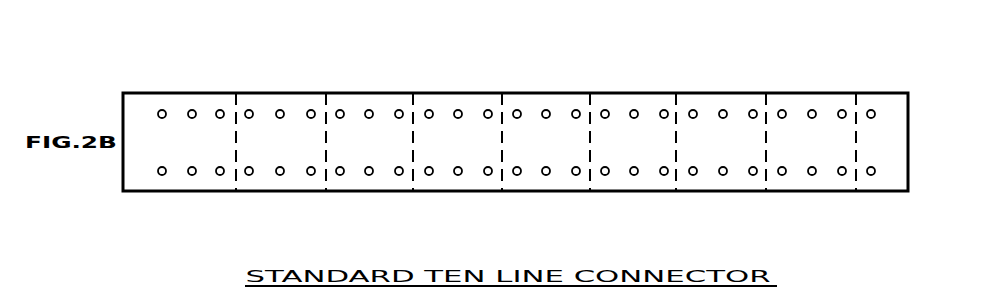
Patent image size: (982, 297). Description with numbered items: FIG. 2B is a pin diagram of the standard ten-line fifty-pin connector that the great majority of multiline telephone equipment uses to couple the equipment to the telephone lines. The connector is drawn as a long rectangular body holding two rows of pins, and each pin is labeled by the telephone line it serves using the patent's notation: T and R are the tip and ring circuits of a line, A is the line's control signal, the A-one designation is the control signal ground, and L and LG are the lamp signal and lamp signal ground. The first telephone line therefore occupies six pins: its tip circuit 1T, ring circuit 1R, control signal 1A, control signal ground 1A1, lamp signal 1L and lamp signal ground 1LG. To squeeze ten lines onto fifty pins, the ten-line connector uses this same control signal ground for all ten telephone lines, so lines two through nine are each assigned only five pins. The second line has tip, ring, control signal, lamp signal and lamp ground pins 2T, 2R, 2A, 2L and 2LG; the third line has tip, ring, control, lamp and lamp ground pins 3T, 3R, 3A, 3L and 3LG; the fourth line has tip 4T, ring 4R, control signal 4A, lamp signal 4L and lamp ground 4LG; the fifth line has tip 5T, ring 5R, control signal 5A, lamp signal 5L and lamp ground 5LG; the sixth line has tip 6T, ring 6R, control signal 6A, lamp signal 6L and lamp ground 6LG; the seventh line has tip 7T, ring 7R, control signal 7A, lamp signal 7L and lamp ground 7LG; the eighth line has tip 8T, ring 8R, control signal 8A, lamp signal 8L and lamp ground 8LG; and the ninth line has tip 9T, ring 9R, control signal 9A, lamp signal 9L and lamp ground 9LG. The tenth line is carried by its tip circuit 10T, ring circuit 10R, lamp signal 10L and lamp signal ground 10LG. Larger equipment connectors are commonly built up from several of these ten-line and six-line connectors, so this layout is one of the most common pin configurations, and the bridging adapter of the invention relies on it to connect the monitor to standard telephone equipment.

The ring circuit of line one 1R is at (162, 110).
The tip circuit of line one 1T is at (162, 175).
The control signal ground of line one 1A1 is at (192, 110).
The control signal of line one 1A is at (192, 175).
The lamp signal of line one 1L is at (220, 110).
The lamp signal ground of line one 1LG is at (220, 175).
The ring circuit of line two 2R is at (249, 110).
The tip circuit of line two 2T is at (249, 175).
The control signal of line two 2A is at (280, 175).
The lamp signal of line two 2L is at (311, 110).
The lamp signal ground of line two 2LG is at (311, 175).
The ring circuit of line three 3R is at (340, 110).
The tip circuit of line three 3T is at (340, 175).
The control signal of line three 3A is at (369, 175).
The lamp signal of line three 3L is at (399, 110).
The lamp signal ground of line three 3LG is at (399, 175).
The ring circuit of line four 4R is at (429, 110).
The tip circuit of line four 4T is at (429, 175).
The control signal of line four 4A is at (458, 175).
The lamp signal of line four 4L is at (488, 110).
The lamp signal ground of line four 4LG is at (488, 175).
The ring circuit of line five 5R is at (517, 110).
The tip circuit of line five 5T is at (517, 175).
The control signal of line five 5A is at (546, 175).
The lamp signal of line five 5L is at (576, 110).
The lamp signal ground of line five 5LG is at (576, 175).
The ring circuit of line six 6R is at (605, 110).
The tip circuit of line six 6T is at (605, 175).
The control signal of line six 6A is at (546, 110).
The lamp signal of line six 6L is at (664, 110).
The lamp signal ground of line six 6LG is at (664, 175).
The ring circuit of line seven 7R is at (723, 110).
The tip circuit of line seven 7T is at (693, 175).
The control signal of line seven 7A is at (458, 110).
The lamp signal of line seven 7L is at (753, 110).
The lamp signal ground of line seven 7LG is at (753, 175).
The ring circuit of line eight 8R is at (782, 110).
The tip circuit of line eight 8T is at (782, 175).
The control signal of line eight 8A is at (369, 110).
The lamp signal of line eight 8L is at (842, 110).
The lamp signal ground of line eight 8LG is at (842, 175).
The ring circuit of line nine 9R is at (871, 110).
The tip circuit of line nine 9T is at (871, 175).
The control signal of line nine 9A is at (280, 110).
The lamp signal of line nine 9L is at (812, 110).
The lamp signal ground of line nine 9LG is at (812, 175).
The ring circuit of line ten 10R is at (693, 110).
The tip circuit of line ten 10T is at (723, 175).
The lamp signal of line ten 10L is at (634, 110).
The lamp signal ground of line ten 10LG is at (634, 175).